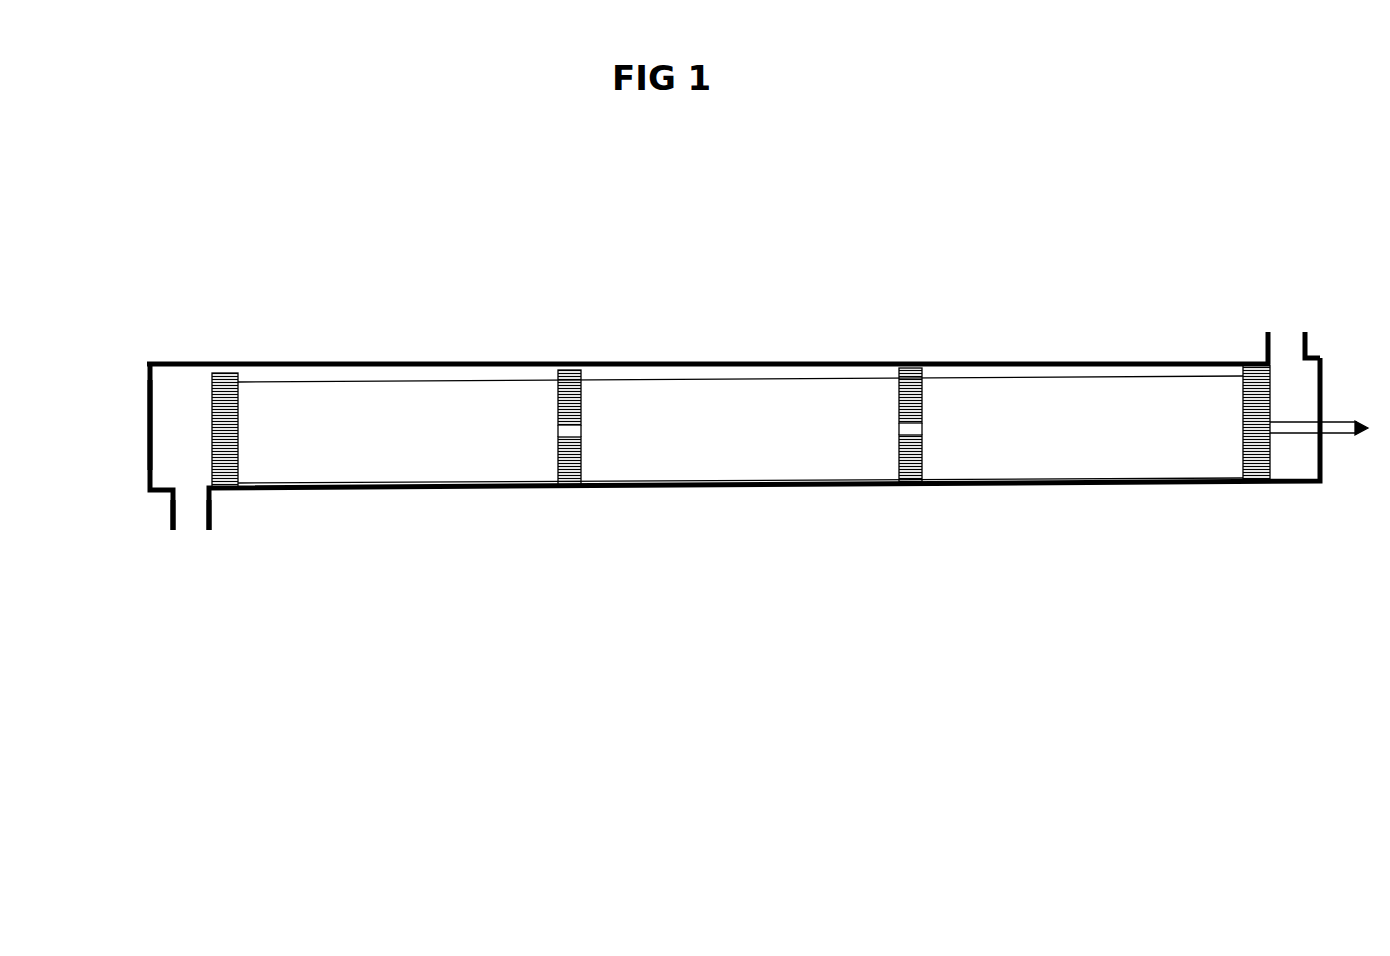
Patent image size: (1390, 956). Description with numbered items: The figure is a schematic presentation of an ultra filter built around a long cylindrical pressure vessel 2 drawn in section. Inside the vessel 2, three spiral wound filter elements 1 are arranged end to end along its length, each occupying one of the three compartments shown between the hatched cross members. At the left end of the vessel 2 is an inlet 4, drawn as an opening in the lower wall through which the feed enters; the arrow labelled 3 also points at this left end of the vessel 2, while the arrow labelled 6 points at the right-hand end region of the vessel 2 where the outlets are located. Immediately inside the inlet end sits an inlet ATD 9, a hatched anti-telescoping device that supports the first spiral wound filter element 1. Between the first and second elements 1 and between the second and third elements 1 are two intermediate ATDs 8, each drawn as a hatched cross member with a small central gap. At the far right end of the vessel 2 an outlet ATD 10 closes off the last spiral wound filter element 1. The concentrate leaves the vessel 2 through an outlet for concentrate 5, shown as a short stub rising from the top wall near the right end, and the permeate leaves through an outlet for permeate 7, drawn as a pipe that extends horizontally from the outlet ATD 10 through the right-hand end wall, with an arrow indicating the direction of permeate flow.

The spiral wound filter element 1 is at (390, 402).
The cylindrical pressure vessel 2 is at (190, 362).
The inlet 3 is at (145, 430).
The inlet 4 is at (183, 530).
The outlet for concentrate 5 is at (1277, 323).
The outlet 6 is at (1322, 392).
The outlet for permeate 7 is at (1362, 431).
The intermediate ATD 8 is at (563, 465).
The inlet ATD 9 is at (230, 470).
The outlet ATD 10 is at (1252, 460).